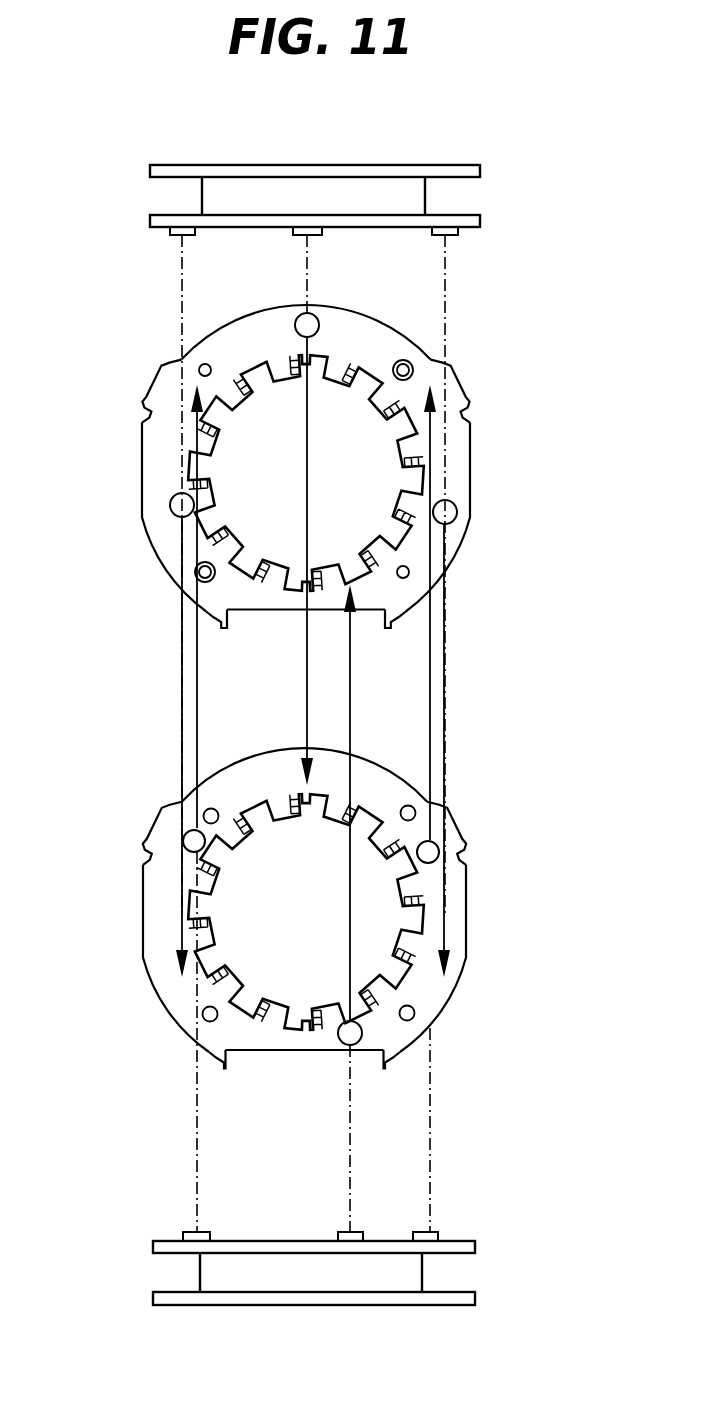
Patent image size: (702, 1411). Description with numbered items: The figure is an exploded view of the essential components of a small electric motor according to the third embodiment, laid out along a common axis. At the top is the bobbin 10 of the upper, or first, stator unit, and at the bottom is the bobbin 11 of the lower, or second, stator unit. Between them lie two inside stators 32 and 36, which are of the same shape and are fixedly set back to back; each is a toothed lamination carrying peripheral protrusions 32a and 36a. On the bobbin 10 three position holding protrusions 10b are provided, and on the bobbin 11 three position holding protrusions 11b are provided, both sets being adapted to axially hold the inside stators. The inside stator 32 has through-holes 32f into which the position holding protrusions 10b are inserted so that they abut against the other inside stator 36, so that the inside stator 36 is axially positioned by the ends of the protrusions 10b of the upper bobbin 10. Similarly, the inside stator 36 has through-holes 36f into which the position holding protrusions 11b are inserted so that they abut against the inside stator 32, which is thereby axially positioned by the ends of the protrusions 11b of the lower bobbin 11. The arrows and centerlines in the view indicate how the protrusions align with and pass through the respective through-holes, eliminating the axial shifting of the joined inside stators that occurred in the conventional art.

The bobbin 10 is at (300, 190).
The position holding protrusions 10b is at (172, 233).
The bobbin 11 is at (235, 1283).
The position holding protrusions 11b is at (205, 1229).
The inside stator 32 is at (455, 462).
The protrusions 32a is at (160, 388).
The through-holes 32f is at (297, 313).
The inside stator 36 is at (455, 908).
The protrusions 36a is at (158, 827).
The through-holes 36f is at (198, 830).